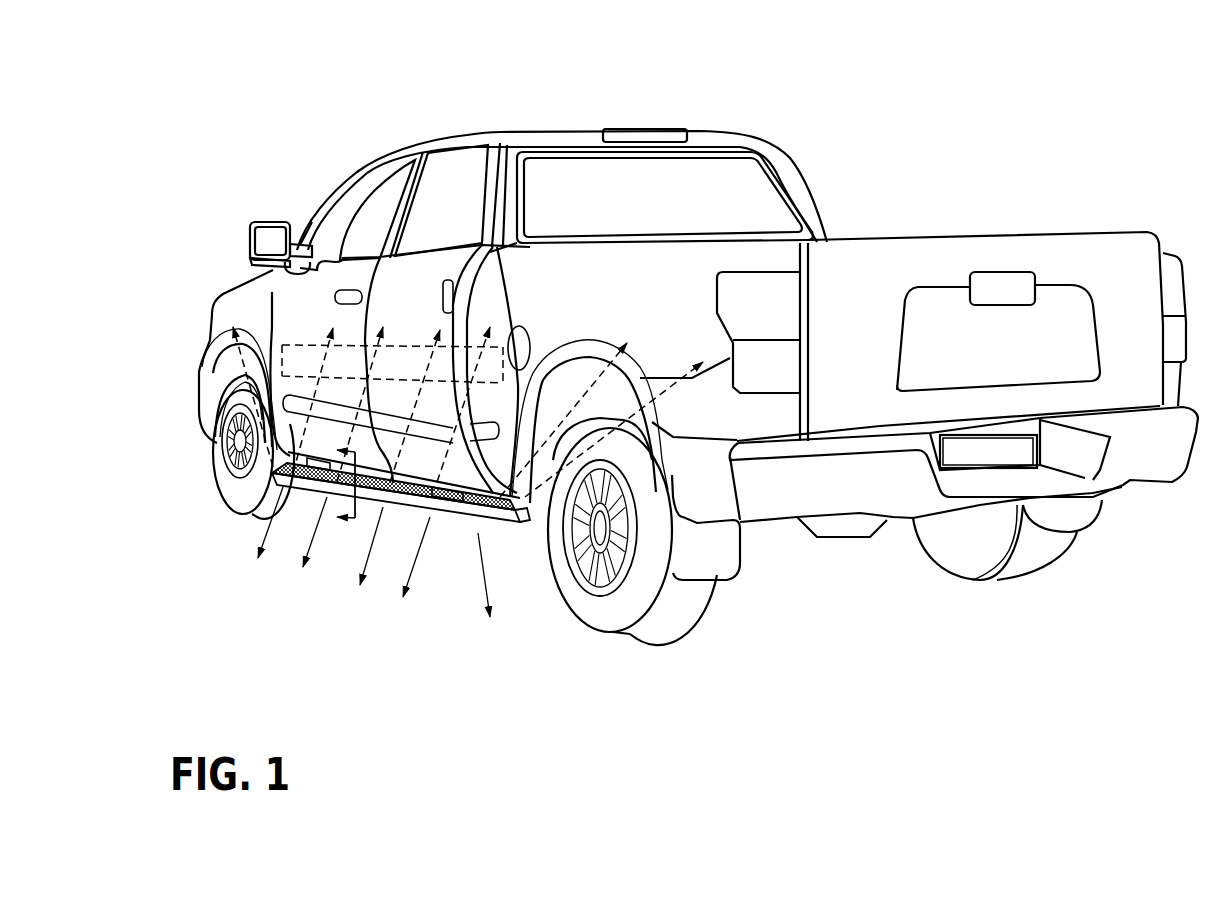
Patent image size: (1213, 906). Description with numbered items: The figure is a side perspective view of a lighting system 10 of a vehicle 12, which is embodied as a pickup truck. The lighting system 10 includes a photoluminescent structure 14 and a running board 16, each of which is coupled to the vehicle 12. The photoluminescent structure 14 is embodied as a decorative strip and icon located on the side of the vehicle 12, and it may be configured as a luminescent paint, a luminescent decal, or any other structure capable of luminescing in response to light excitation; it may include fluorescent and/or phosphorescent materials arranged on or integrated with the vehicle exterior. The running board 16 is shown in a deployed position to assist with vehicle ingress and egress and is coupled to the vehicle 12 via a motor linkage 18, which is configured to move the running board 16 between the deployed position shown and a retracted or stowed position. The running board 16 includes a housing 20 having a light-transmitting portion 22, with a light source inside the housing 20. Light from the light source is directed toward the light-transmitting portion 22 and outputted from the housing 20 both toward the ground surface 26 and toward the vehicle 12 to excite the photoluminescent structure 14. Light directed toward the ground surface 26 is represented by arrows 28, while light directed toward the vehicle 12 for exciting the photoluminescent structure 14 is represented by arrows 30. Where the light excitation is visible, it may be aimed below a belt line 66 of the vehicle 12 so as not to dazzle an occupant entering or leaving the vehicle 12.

The lighting system 10 is at (247, 148).
The vehicle 12 is at (803, 152).
The photoluminescent structure 14 is at (408, 347).
The running board 16 is at (284, 457).
The motor linkage 18 is at (477, 535).
The housing 20 is at (515, 507).
The light-transmitting portion 22 is at (373, 510).
The ground surface 26 is at (369, 652).
The arrows 28 is at (262, 533).
The arrows 30 is at (290, 345).
The belt line 66 is at (362, 172).